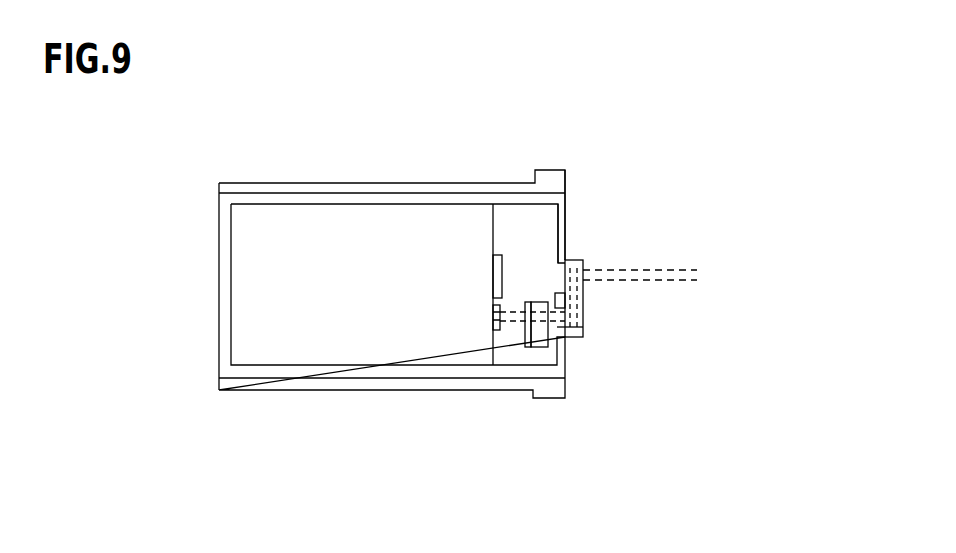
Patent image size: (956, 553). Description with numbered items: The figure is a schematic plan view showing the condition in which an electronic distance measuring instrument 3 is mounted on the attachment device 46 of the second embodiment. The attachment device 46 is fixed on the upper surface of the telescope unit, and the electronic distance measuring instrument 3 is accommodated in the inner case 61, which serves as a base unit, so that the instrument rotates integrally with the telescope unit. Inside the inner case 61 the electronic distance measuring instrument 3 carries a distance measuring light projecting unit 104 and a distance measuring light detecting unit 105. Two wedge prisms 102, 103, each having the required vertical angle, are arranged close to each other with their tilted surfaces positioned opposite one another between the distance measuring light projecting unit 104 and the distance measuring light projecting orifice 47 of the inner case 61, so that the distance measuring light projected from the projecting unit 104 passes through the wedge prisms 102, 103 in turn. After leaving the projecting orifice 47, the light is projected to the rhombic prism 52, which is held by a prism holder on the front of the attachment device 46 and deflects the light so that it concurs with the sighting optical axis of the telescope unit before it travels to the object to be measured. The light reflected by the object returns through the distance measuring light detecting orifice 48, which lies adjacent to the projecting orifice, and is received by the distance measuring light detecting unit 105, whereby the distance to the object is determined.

The attachment device 46 is at (408, 170).
The electronic distance measuring instrument 3 is at (231, 240).
The inner case 61 is at (566, 220).
The distance measuring light detecting unit 105 is at (502, 262).
The distance measuring light projecting unit 104 is at (498, 327).
The wedge prism 103 is at (526, 340).
The wedge prism 102 is at (538, 348).
The distance measuring light detecting orifice 48 is at (558, 282).
The rhombic prism 52 is at (583, 298).
The distance measuring light projecting orifice 47 is at (583, 328).